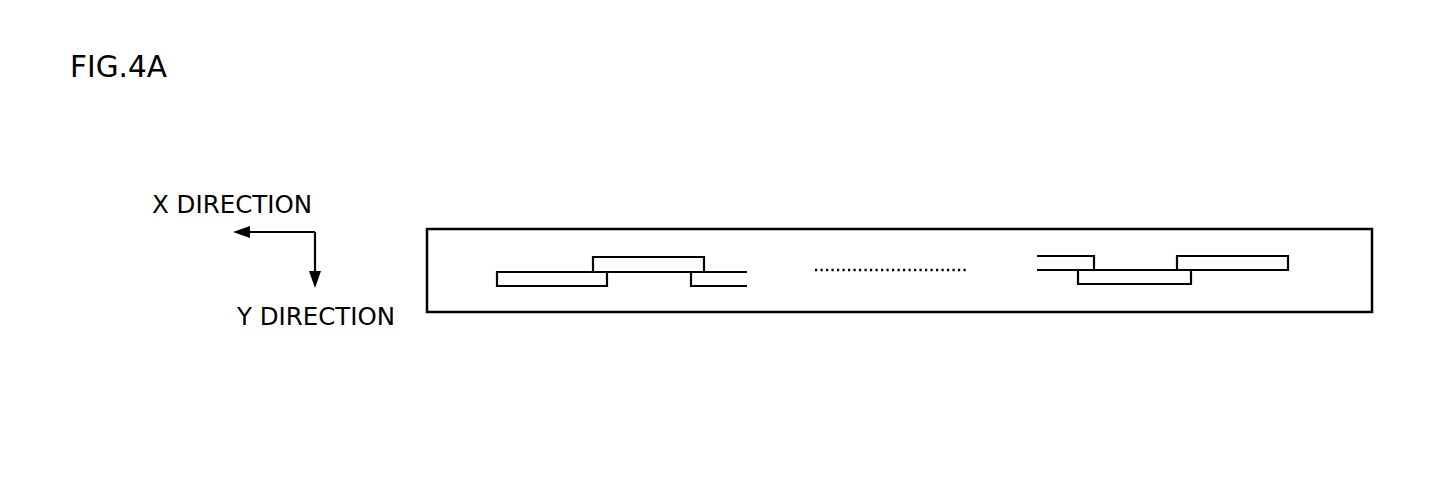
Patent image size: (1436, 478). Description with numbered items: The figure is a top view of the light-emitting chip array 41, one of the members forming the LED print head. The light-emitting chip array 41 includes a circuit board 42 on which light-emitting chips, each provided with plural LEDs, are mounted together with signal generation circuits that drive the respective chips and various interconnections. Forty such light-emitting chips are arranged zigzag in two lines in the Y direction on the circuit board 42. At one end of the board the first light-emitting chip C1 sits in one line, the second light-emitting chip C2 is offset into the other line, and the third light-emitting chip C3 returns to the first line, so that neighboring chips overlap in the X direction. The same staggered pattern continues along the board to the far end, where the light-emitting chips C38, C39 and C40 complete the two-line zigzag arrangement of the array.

The circuit board 42 is at (479, 229).
The light-emitting chip array 41 is at (1312, 263).
The light-emitting chip C1 is at (538, 271).
The light-emitting chip C2 is at (650, 256).
The light-emitting chip C3 is at (720, 271).
The light-emitting chip C38 is at (1069, 256).
The light-emitting chip C39 is at (1137, 270).
The light-emitting chip C40 is at (1233, 256).